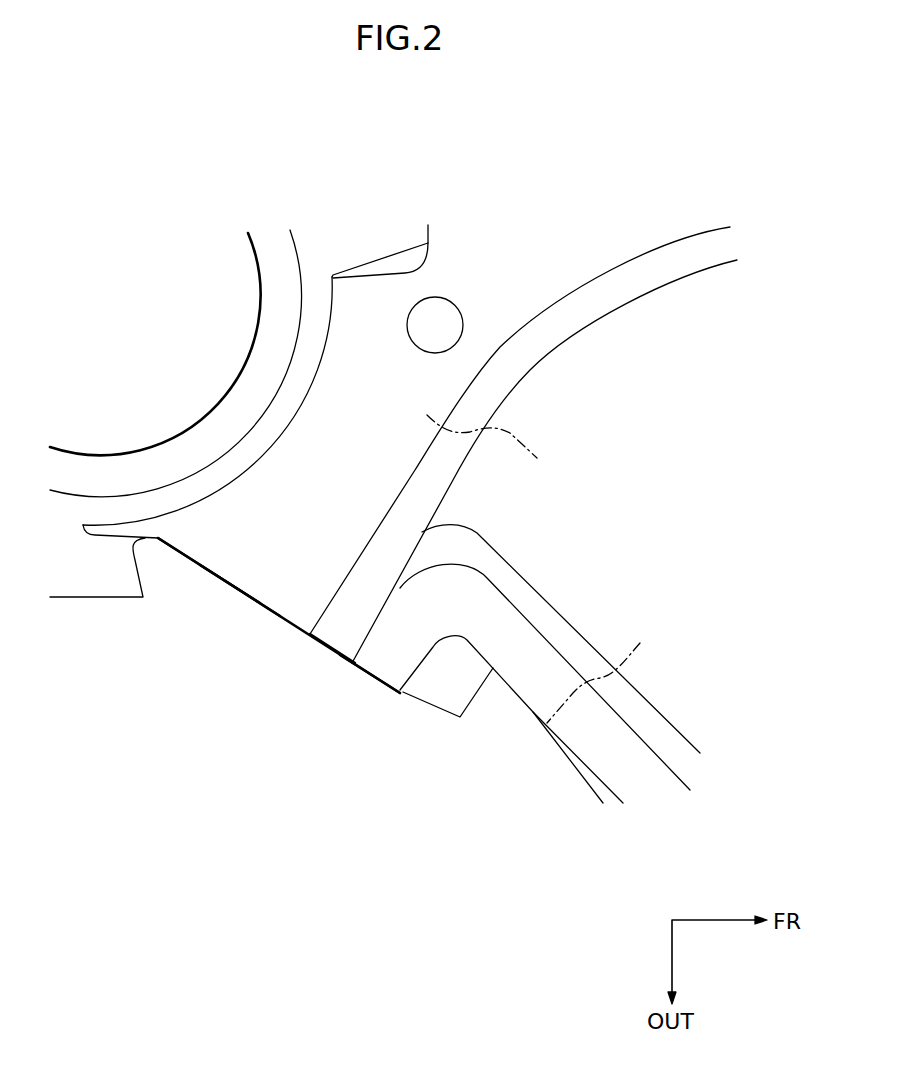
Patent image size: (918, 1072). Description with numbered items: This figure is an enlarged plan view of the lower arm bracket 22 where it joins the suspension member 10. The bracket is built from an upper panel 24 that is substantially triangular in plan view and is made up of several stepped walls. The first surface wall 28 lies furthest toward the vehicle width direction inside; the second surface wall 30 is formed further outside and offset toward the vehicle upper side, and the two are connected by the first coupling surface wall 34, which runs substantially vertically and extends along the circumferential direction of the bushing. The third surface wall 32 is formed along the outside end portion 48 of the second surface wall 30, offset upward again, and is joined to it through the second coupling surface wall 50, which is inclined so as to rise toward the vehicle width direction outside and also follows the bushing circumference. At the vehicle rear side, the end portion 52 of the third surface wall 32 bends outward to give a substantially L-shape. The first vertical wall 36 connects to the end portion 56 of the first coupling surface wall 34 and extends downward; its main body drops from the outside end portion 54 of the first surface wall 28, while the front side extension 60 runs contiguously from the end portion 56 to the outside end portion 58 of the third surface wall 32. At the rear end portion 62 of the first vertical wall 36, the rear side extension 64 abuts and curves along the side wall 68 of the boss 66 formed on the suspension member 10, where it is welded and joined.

The suspension member 10 is at (305, 214).
The lower arm bracket 22 is at (270, 638).
The upper panel 24 is at (550, 264).
The first surface wall 28 is at (333, 483).
The second surface wall 30 is at (607, 495).
The third surface wall 32 is at (507, 663).
The first coupling surface wall 34 is at (507, 372).
The first vertical wall 36 is at (231, 598).
The end portion 48 is at (530, 570).
The second coupling surface wall 50 is at (548, 612).
The end portion 52 is at (407, 657).
The end portion 54 is at (237, 575).
The end portion 56 is at (333, 647).
The end portion 58 is at (387, 660).
The front side extension 60 is at (371, 684).
The rear end portion 62 is at (167, 550).
The rear side extension 64 is at (103, 533).
The boss 66 is at (295, 383).
The side wall 68 is at (243, 477).